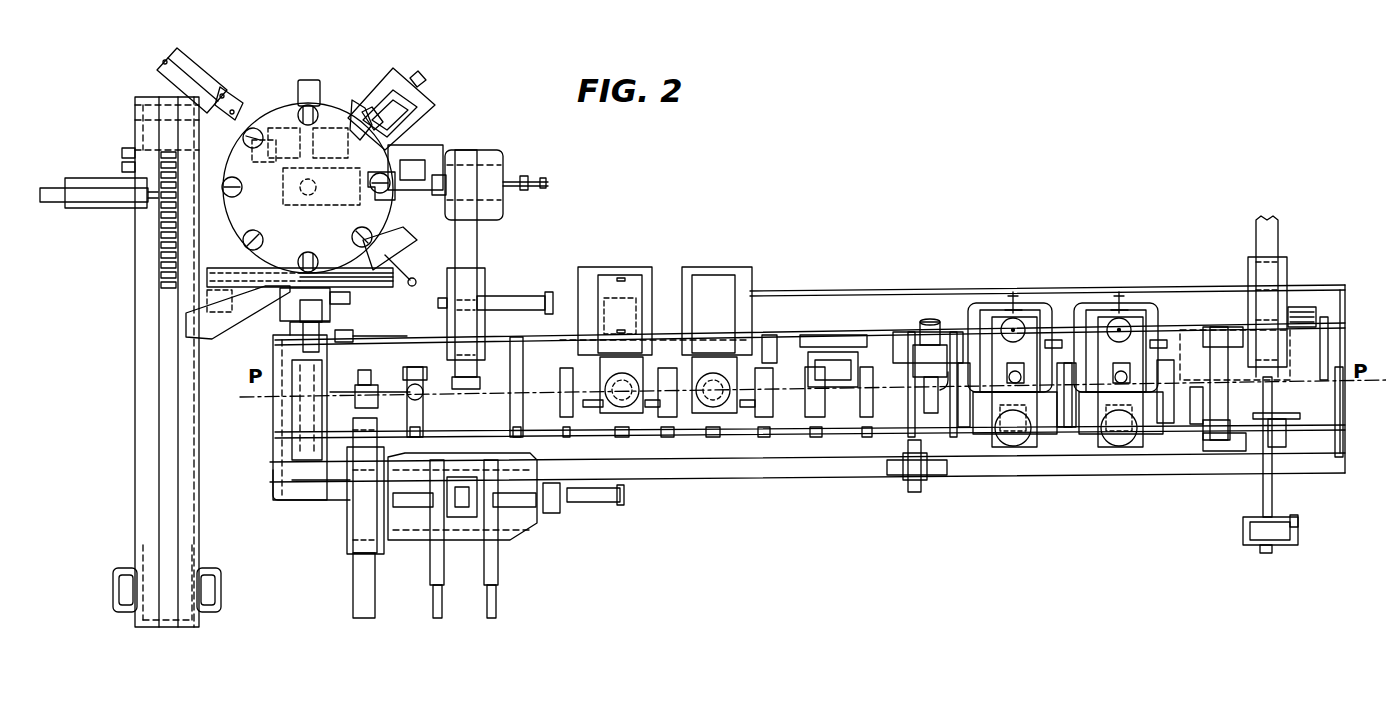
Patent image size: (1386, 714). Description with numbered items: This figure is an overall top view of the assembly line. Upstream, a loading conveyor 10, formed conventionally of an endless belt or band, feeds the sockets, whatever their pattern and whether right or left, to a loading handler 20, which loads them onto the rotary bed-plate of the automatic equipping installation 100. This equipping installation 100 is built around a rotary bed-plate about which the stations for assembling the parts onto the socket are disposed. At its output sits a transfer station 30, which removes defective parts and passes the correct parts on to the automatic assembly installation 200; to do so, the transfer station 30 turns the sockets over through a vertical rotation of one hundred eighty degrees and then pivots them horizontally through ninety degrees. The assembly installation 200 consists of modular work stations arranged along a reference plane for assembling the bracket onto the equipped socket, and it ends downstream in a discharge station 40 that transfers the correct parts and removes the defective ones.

The loading conveyor 10 is at (135, 406).
The loading handler 20 is at (120, 212).
The transfer station 30 is at (493, 297).
The discharge station 40 is at (1296, 281).
The automatic equipping installation 100 is at (348, 96).
The automatic assembly installation 200 is at (987, 288).